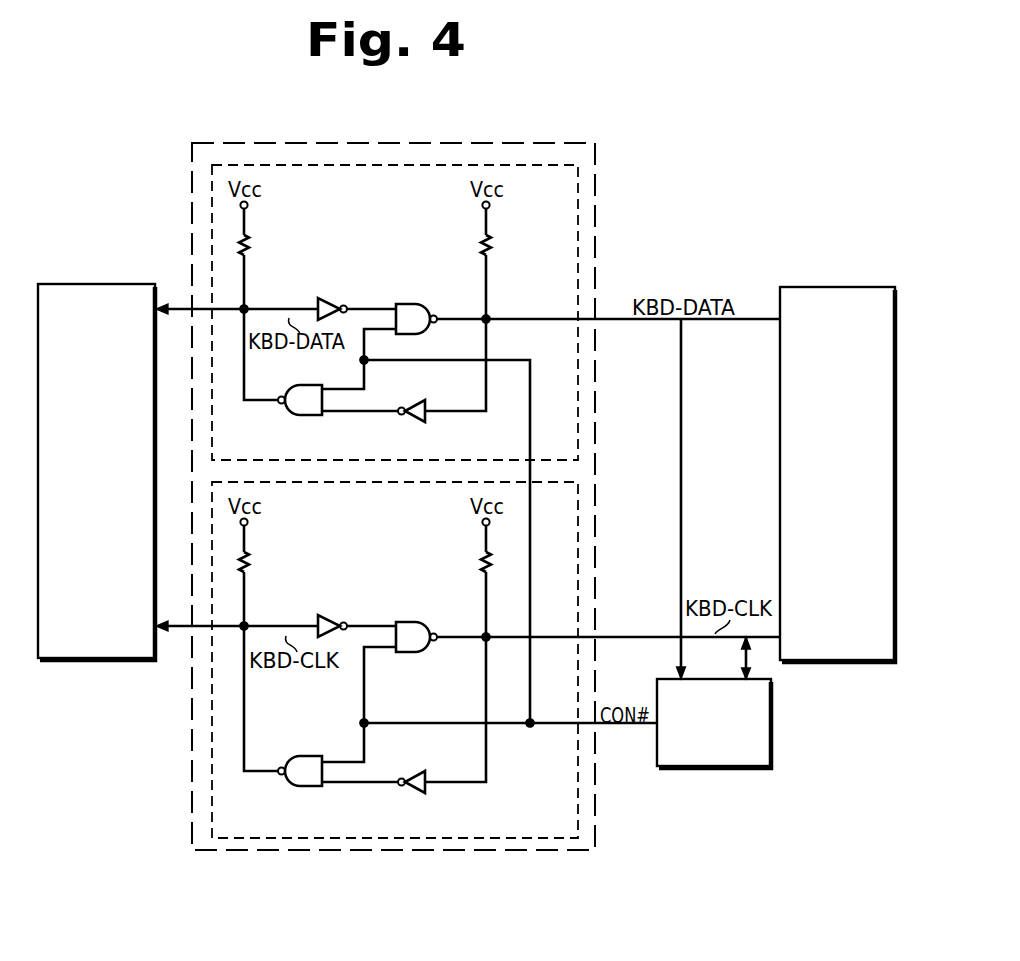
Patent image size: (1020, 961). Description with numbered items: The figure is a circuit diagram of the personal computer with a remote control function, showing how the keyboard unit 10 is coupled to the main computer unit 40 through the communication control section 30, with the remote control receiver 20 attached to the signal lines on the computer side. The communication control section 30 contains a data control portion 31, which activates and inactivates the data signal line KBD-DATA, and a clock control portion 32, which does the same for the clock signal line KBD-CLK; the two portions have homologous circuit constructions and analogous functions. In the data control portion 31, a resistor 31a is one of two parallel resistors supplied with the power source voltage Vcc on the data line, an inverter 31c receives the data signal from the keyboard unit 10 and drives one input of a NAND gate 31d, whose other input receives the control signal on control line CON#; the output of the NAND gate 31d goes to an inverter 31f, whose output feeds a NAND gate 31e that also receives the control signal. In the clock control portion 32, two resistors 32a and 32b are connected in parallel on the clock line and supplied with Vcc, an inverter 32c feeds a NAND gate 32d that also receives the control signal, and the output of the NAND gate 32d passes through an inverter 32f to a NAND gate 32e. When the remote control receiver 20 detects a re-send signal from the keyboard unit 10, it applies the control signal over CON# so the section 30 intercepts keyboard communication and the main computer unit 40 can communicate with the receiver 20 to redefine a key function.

The keyboard unit 10 is at (97, 284).
The remote control receiver 20 is at (712, 770).
The communication control section 30 is at (596, 212).
The data control portion 31 is at (578, 398).
The clock control portion 32 is at (578, 561).
The main computer unit 40 is at (838, 287).
The resistor 31a is at (250, 240).
The inverter 31c is at (324, 297).
The NAND gate 31d is at (408, 303).
The NAND gate 31e is at (309, 417).
The inverter 31f is at (412, 424).
The resistor 32a is at (250, 557).
The resistor 32b is at (480, 242).
The inverter 32c is at (324, 615).
The NAND gate 32d is at (408, 621).
The NAND gate 32e is at (309, 788).
The inverter 32f is at (412, 795).